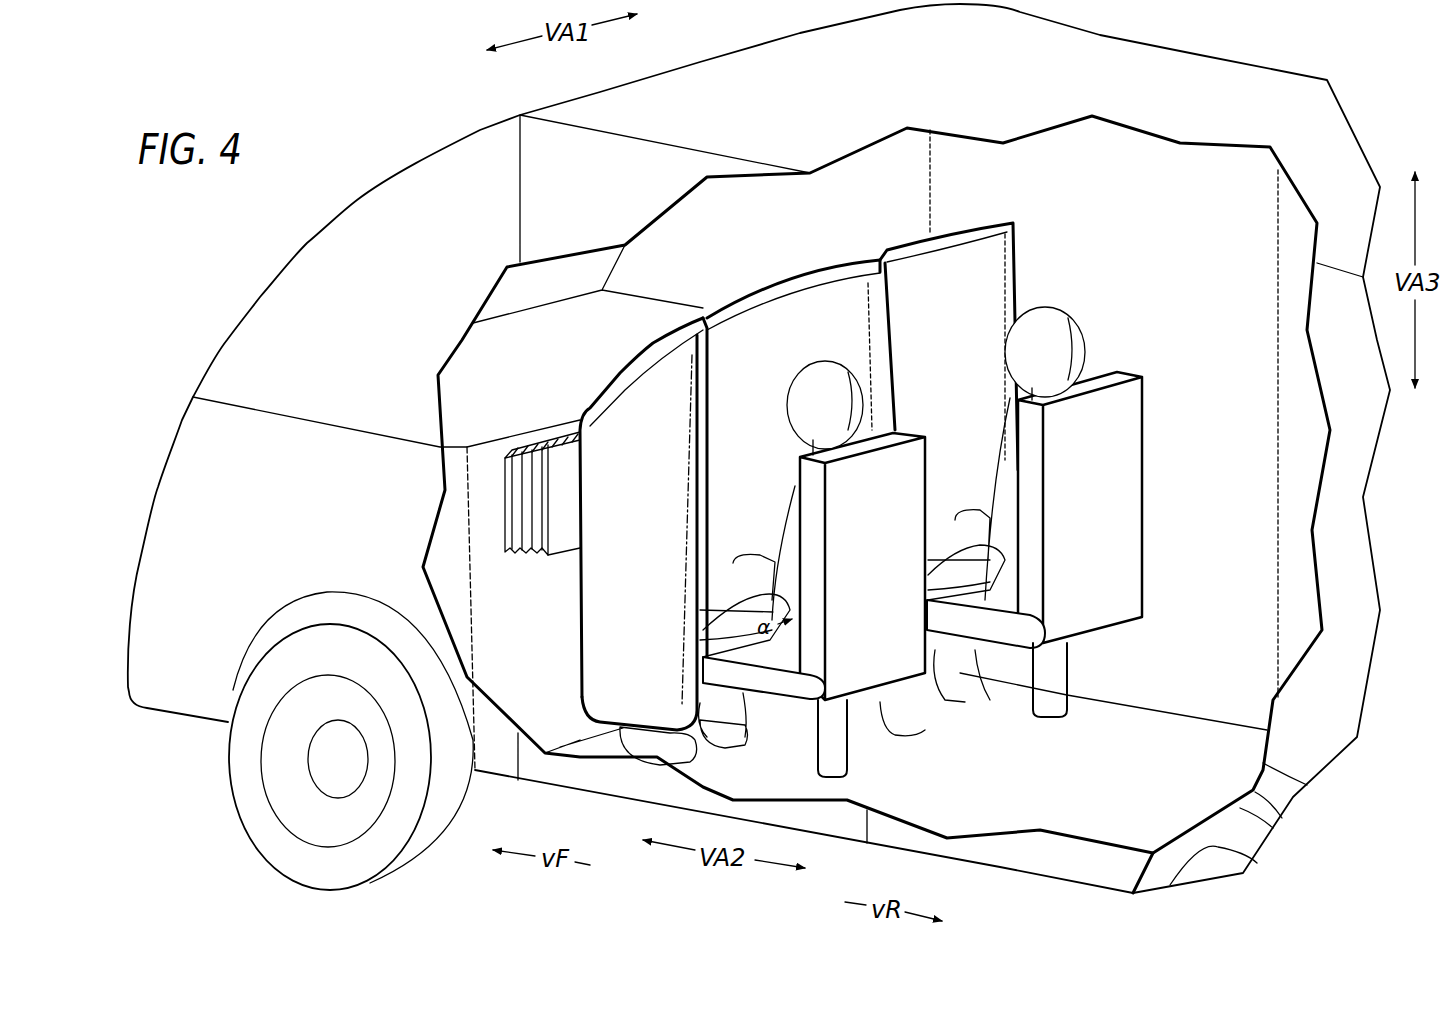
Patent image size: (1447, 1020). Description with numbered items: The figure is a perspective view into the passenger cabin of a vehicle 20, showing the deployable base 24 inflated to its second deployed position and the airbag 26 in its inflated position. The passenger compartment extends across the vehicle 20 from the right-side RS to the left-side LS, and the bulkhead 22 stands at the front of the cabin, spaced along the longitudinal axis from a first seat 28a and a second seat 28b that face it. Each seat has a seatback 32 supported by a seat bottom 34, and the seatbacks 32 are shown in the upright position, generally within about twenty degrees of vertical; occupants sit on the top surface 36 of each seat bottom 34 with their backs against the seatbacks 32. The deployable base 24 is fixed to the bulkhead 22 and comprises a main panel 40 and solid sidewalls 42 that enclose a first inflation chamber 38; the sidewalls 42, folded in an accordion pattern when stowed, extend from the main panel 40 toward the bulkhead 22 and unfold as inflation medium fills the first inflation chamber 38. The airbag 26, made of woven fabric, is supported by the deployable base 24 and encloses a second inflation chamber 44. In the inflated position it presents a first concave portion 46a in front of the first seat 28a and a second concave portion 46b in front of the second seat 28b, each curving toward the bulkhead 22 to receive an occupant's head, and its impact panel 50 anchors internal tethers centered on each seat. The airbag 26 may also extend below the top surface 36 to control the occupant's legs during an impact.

The vehicle 20 is at (350, 128).
The bulkhead 22 is at (560, 330).
The deployable base 24 is at (520, 556).
The airbag 26 is at (993, 220).
The first seat 28a is at (875, 720).
The second seat 28b is at (1130, 650).
The seatback 32 is at (795, 480).
The seat bottom 34 is at (777, 684).
The top surface 36 is at (728, 655).
The first inflation chamber 38 is at (565, 460).
The main panel 40 is at (567, 530).
The sidewalls 42 is at (533, 517).
The second inflation chamber 44 is at (603, 650).
The first concave portion 46a is at (728, 297).
The second concave portion 46b is at (898, 245).
The impact panel 50 is at (945, 275).
The front F is at (158, 487).
The rear R is at (1417, 554).
The left-side LS is at (467, 605).
The right-side RS is at (670, 297).